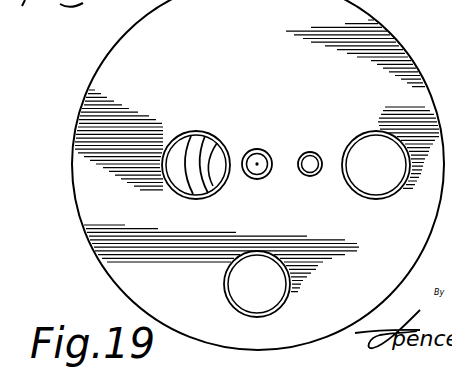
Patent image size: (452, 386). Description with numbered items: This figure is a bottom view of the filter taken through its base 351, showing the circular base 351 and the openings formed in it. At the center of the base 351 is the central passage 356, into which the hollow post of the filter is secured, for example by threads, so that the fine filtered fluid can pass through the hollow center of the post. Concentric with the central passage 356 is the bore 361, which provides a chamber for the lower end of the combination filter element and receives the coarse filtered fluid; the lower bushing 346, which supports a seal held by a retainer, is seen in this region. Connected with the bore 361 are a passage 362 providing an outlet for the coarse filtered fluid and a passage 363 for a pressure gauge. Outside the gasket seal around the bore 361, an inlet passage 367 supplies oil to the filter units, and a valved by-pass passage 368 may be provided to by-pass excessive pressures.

The base 351 is at (89, 243).
The passage 362 is at (176, 137).
The bore 361 is at (181, 172).
The bushing 346 is at (216, 143).
The central passage 356 is at (257, 180).
The passage 363 is at (310, 152).
The inlet passage 367 is at (378, 199).
The valved by-pass passage 368 is at (290, 276).